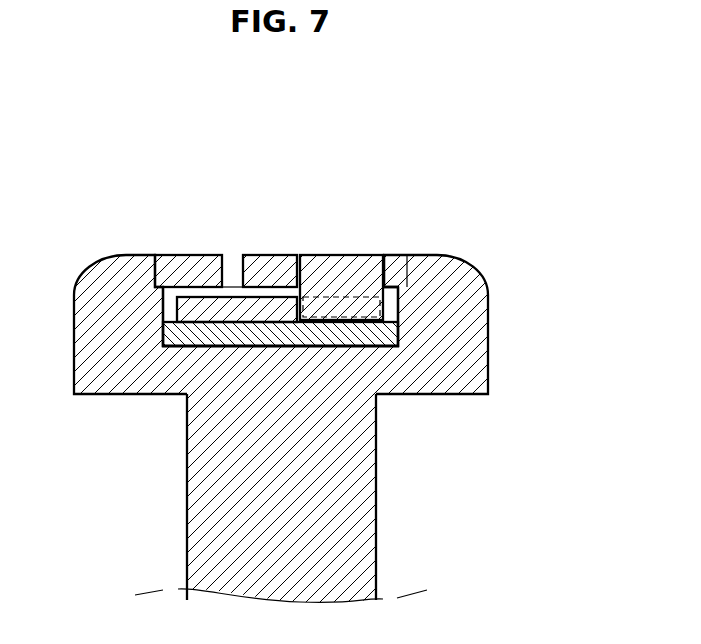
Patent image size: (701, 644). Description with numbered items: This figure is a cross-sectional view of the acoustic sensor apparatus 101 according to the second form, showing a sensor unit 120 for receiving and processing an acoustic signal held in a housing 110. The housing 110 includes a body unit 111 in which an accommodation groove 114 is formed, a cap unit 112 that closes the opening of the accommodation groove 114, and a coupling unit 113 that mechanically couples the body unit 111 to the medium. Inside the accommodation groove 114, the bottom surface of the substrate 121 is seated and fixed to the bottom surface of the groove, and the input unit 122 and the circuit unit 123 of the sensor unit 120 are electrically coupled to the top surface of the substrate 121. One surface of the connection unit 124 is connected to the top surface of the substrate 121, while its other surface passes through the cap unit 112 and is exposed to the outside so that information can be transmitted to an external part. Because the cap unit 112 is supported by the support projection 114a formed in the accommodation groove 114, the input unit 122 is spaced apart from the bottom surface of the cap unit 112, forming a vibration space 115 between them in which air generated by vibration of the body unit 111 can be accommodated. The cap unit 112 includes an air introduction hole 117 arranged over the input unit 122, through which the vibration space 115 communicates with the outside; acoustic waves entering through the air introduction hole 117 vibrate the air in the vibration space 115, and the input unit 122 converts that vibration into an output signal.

The acoustic sensor apparatus 101 is at (184, 128).
The housing 110 is at (316, 393).
The body unit 111 is at (460, 368).
The cap unit 112 is at (195, 267).
The coupling unit 113 is at (377, 498).
The accommodation groove 114 is at (392, 316).
The support projection 114a is at (405, 280).
The vibration space 115 is at (292, 292).
The air introduction hole 117 is at (224, 266).
The sensor unit 120 is at (260, 390).
The substrate 121 is at (177, 333).
The input unit 122 is at (180, 298).
The circuit unit 123 is at (360, 297).
The connection unit 124 is at (285, 393).